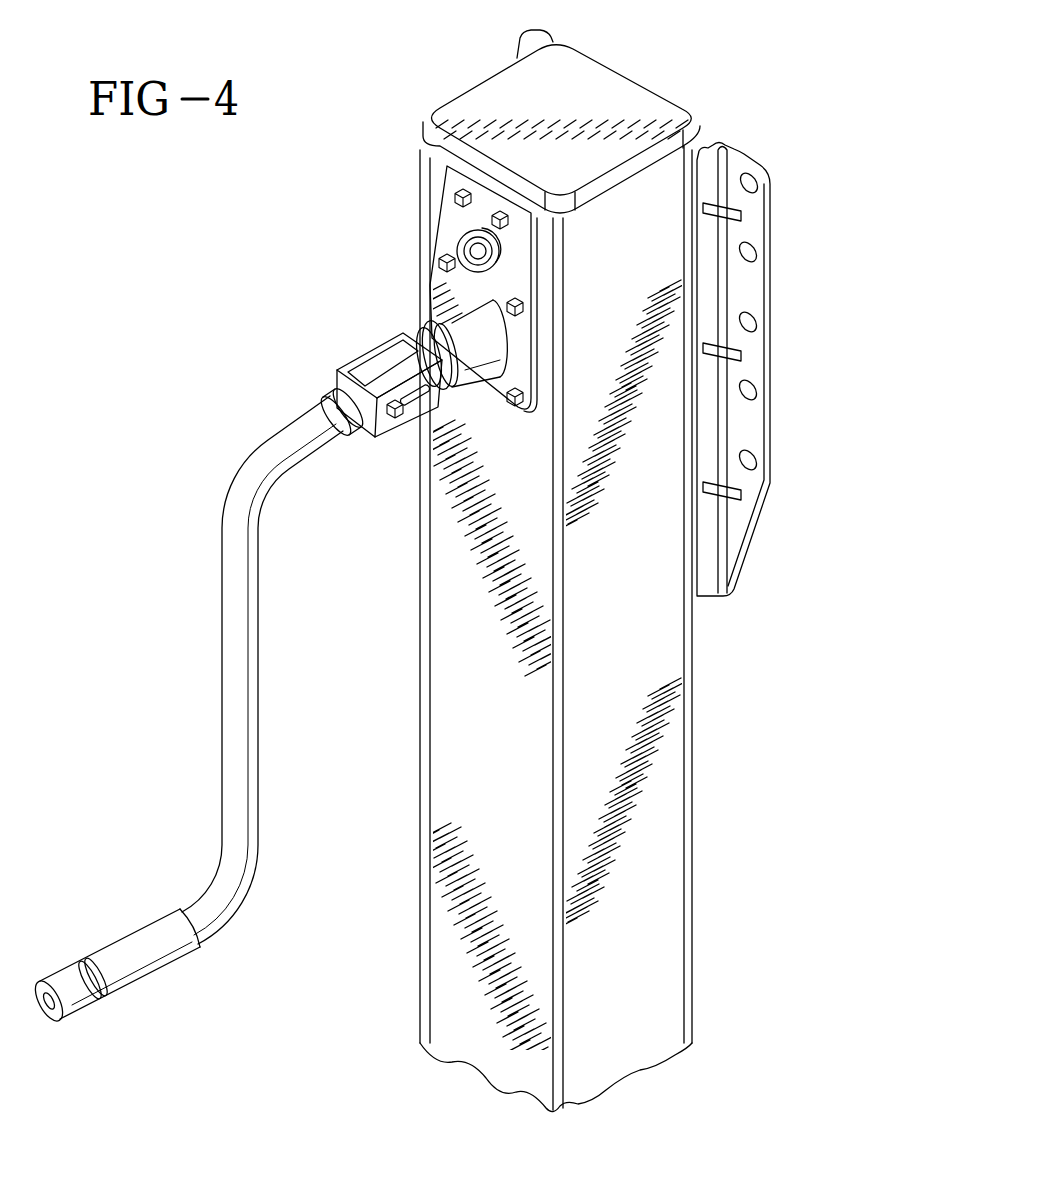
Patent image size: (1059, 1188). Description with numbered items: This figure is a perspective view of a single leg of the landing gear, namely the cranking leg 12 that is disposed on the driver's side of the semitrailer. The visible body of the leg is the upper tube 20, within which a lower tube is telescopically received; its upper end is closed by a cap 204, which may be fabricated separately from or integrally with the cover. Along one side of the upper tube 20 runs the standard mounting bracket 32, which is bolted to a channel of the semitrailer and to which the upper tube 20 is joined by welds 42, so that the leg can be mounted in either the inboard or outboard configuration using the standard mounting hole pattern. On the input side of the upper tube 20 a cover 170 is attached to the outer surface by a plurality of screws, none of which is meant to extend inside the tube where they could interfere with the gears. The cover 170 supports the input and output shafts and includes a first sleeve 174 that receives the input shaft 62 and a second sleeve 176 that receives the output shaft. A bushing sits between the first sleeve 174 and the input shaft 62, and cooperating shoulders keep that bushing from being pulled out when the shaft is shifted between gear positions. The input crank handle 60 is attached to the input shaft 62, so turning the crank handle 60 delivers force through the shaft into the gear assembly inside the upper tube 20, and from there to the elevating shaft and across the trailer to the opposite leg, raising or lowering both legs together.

The cranking leg 12 is at (524, 566).
The upper tube 20 is at (453, 716).
The mounting bracket 32 is at (758, 292).
The welds 42 is at (702, 166).
The input crank handle 60 is at (228, 676).
The input shaft 62 is at (392, 365).
The cover 170 is at (440, 235).
The first sleeve 174 is at (452, 322).
The second sleeve 176 is at (499, 253).
The cap 204 is at (608, 84).